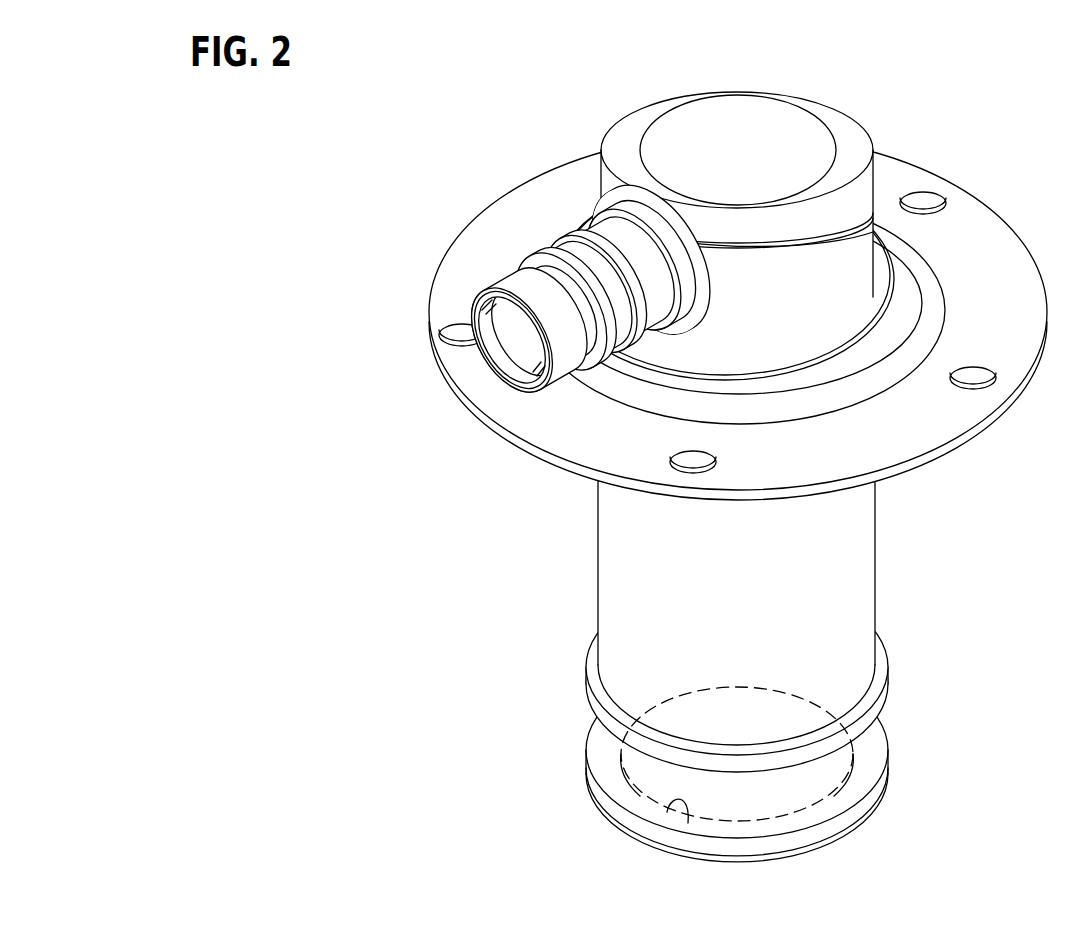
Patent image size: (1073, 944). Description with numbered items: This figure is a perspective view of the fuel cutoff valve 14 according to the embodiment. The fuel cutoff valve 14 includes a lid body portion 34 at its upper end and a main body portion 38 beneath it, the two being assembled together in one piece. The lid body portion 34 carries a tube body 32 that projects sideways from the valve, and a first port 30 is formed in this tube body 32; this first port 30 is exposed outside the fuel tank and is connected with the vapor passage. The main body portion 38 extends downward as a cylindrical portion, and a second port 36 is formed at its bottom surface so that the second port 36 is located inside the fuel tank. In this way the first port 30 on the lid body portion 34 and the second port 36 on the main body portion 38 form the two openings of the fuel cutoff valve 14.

The fuel cutoff valve 14 is at (990, 131).
The first port 30 is at (478, 366).
The tube body 32 is at (557, 237).
The lid body portion 34 is at (848, 108).
The second port 36 is at (681, 828).
The main body portion 38 is at (880, 577).